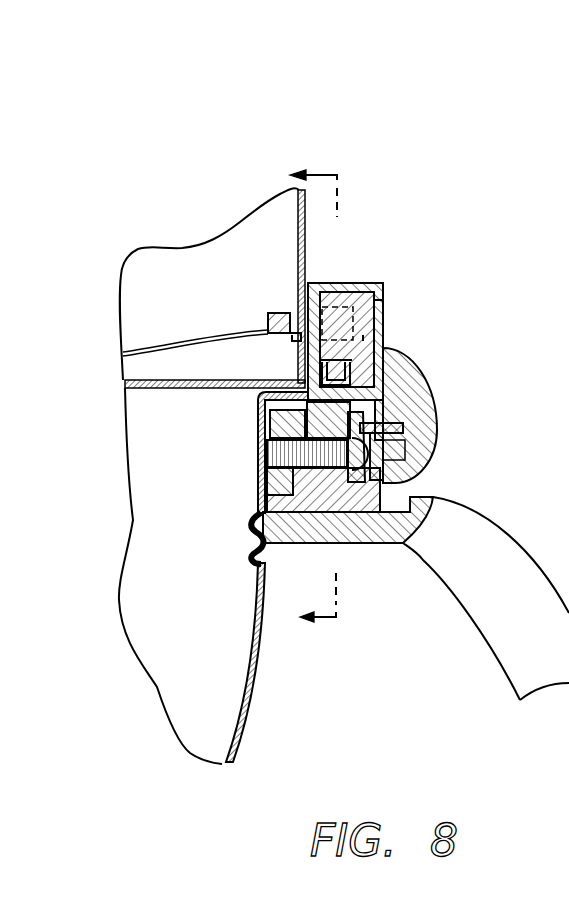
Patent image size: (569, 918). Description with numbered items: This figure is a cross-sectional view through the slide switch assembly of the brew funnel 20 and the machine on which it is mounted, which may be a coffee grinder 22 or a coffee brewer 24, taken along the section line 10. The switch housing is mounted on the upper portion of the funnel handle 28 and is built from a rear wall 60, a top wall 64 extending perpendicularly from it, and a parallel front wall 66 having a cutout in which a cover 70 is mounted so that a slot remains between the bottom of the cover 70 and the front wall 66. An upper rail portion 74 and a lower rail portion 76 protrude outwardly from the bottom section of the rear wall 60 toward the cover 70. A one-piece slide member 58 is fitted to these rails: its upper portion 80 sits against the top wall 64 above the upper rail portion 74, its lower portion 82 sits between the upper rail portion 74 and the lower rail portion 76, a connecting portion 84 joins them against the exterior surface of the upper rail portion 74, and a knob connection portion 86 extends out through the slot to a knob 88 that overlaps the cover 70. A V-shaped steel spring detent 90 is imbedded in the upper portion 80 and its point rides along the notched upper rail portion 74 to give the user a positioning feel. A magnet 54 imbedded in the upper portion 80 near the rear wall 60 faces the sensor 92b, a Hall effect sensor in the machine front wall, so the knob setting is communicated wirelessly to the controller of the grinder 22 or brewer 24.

The section line 10- 10 is at (313, 401).
The brew funnel 20 is at (183, 688).
The coffee grinder 22 is at (186, 476).
The coffee brewer 24 is at (153, 273).
The handle 28 is at (495, 566).
The magnet 54 is at (299, 297).
The slide member 58 is at (363, 338).
The rear wall 60 is at (318, 283).
The top wall 64 is at (365, 283).
The front wall 66 is at (413, 467).
The cover 70 is at (384, 317).
The upper rail portion 74 is at (380, 377).
The lower rail portion 76 is at (410, 405).
The upper portion 80 is at (258, 423).
The lower portion 82 is at (384, 297).
The connecting portion 84 is at (347, 422).
The knob connection portion 86 is at (407, 432).
The knob 88 is at (407, 448).
The spring detent 90 is at (301, 370).
The sensor 92b is at (267, 316).